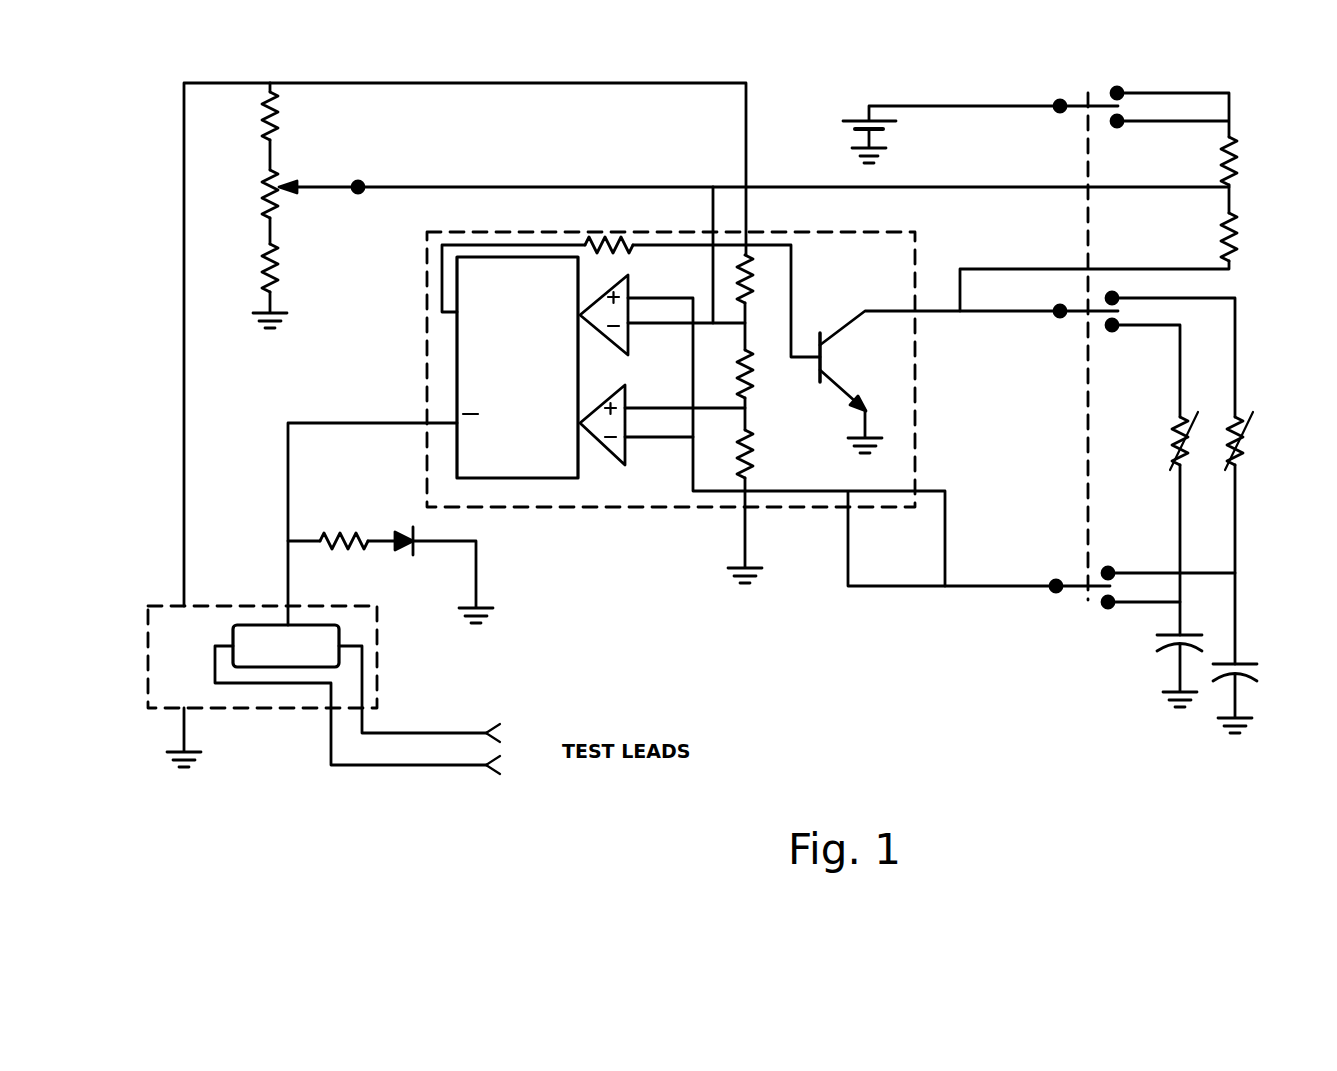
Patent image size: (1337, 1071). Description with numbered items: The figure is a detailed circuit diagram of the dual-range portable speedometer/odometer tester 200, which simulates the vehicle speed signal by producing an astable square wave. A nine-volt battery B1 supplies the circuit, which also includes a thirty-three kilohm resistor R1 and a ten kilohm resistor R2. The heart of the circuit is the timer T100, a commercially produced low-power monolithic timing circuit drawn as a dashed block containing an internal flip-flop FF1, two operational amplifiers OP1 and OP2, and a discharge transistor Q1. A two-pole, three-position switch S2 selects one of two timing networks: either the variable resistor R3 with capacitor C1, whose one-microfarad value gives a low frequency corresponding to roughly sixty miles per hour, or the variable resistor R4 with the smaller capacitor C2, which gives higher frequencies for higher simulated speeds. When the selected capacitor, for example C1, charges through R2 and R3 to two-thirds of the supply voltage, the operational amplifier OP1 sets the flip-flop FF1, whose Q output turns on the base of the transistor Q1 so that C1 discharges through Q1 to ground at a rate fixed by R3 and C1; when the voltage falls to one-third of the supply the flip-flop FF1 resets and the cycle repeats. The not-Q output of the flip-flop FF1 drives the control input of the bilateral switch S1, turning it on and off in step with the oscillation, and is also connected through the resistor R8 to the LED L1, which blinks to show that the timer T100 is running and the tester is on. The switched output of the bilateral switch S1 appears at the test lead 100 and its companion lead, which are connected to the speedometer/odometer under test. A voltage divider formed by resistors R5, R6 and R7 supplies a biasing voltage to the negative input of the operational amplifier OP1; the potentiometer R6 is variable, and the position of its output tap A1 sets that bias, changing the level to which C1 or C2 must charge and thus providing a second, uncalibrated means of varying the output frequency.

The potentiometer output A1 is at (341, 180).
The resistor R5 is at (302, 106).
The potentiometer R6 is at (266, 170).
The resistor R7 is at (266, 246).
The flip-flop FF1 is at (487, 270).
The operational amplifier OP1 is at (598, 290).
The operational amplifier OP2 is at (600, 445).
The timer T100 is at (700, 510).
The transistor Q1 is at (835, 395).
The battery B1 is at (885, 130).
The switch S2 is at (1072, 612).
The resistor R1 is at (1242, 152).
The resistor R2 is at (1242, 228).
The variable resistor R3 is at (1174, 442).
The variable resistor R4 is at (1252, 452).
The capacitor C1 is at (1158, 646).
The capacitor C2 is at (1253, 676).
The resistor R8 is at (366, 541).
The LED L1 is at (420, 536).
The bilateral switch S1 is at (140, 661).
The test lead 100 is at (518, 735).
The tester 200 is at (518, 768).